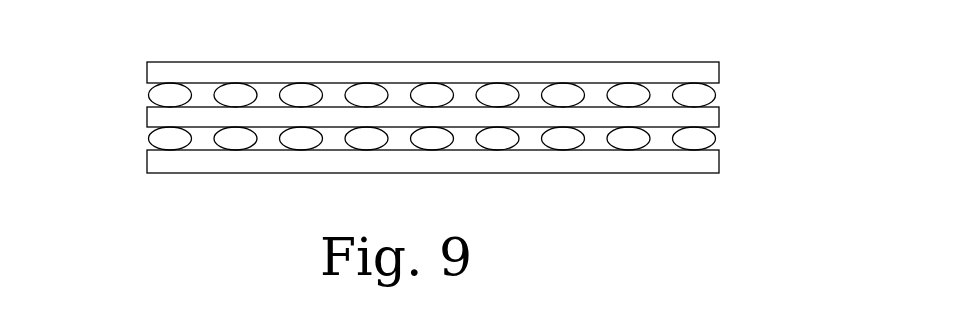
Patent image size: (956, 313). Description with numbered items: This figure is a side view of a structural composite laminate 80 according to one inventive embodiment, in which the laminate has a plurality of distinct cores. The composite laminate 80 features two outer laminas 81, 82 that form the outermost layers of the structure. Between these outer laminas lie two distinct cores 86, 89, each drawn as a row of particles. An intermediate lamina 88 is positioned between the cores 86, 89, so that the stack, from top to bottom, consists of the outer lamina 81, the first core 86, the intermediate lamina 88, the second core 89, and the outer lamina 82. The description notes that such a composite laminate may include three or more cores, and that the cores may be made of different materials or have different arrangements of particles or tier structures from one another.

The composite laminate 80 is at (614, 60).
The outer lamina 81 is at (163, 62).
The outer lamina 82 is at (719, 155).
The core 86 is at (170, 87).
The intermediate lamina 88 is at (719, 125).
The core 89 is at (165, 128).